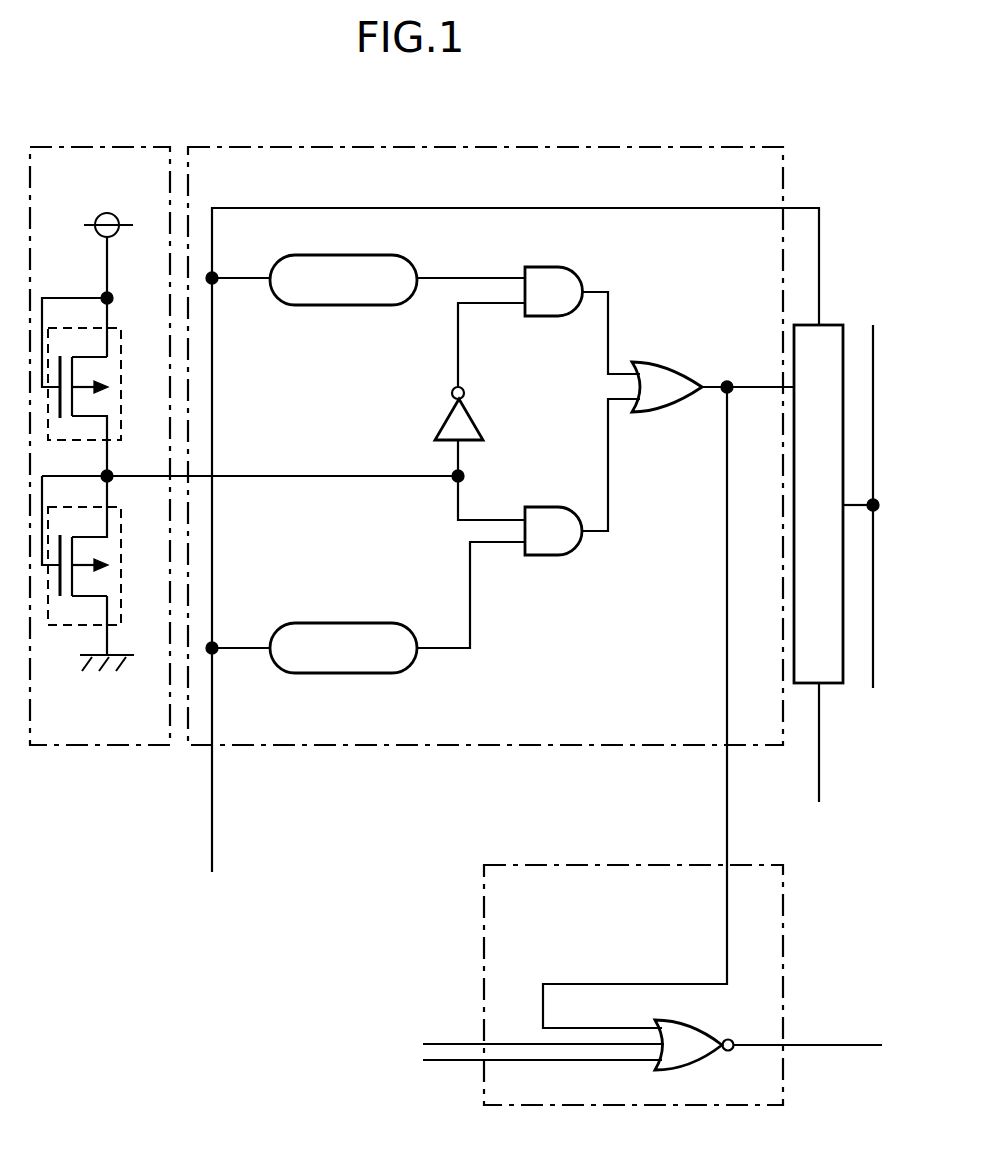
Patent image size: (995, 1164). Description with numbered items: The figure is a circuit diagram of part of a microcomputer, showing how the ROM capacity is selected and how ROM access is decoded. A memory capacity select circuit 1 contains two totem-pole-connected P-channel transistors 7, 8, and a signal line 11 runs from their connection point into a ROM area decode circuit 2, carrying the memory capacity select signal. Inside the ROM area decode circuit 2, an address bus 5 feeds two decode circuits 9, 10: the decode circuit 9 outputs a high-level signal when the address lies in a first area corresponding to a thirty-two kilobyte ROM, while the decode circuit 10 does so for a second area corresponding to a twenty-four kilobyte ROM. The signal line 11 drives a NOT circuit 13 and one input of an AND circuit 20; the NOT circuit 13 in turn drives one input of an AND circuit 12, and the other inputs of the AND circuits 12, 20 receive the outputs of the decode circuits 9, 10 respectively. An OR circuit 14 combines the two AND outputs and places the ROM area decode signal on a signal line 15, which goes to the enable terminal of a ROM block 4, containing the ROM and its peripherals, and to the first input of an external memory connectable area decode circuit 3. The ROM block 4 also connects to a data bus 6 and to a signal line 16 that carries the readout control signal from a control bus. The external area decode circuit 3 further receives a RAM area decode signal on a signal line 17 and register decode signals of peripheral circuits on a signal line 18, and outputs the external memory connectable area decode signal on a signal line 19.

The memory capacity select circuit 1 is at (113, 147).
The ROM area decode circuit 2 is at (528, 147).
The external memory connectable area decode circuit 3 is at (484, 900).
The ROM block 4 is at (836, 325).
The address bus 5 is at (213, 817).
The data bus 6 is at (873, 367).
The P-channel transistor 7 is at (121, 357).
The P-channel transistor 8 is at (121, 552).
The decode circuit 9 is at (335, 305).
The decode circuit 10 is at (340, 623).
The signal line 11 is at (278, 476).
The AND circuit 12 is at (549, 316).
The NOT circuit 13 is at (441, 425).
The OR circuit 14 is at (660, 362).
The signal line 15 is at (745, 387).
The signal line 16 is at (819, 773).
The signal line 17 is at (444, 1043).
The signal line 18 is at (446, 1061).
The signal line 19 is at (820, 1044).
The AND circuit 20 is at (548, 507).